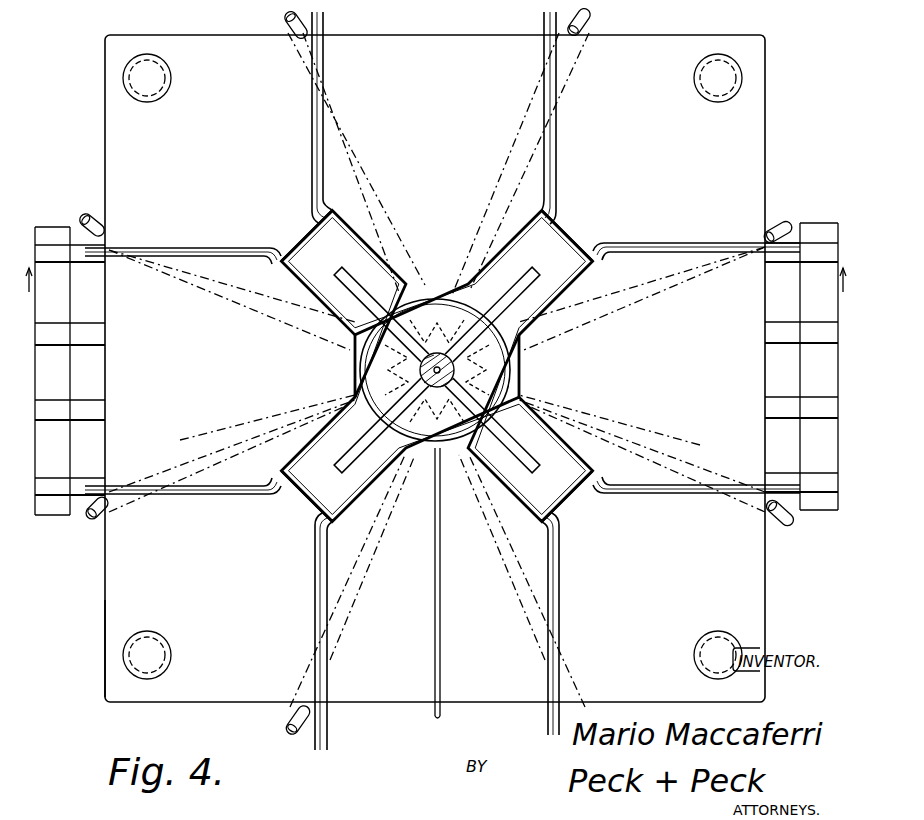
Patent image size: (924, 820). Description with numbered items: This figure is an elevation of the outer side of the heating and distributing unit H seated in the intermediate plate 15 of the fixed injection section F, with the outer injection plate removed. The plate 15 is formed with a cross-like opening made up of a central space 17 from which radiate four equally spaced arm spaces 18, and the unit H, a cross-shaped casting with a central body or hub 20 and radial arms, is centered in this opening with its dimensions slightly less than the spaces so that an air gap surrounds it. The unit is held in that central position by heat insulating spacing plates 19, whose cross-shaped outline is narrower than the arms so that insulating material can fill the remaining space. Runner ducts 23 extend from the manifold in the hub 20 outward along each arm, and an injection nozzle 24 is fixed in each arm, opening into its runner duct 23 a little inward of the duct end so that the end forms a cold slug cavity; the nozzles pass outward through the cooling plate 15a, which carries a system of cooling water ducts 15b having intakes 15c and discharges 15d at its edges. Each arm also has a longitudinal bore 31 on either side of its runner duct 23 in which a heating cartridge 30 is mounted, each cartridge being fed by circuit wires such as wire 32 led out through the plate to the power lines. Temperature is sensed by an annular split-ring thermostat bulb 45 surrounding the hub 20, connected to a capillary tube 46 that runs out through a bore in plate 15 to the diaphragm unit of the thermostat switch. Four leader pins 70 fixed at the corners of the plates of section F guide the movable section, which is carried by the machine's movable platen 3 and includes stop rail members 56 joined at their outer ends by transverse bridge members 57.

The movable platen 3 is at (436, 369).
The intermediate plate 15 is at (210, 58).
The cooling plate 15a is at (323, 375).
The cooling water ducts 15b is at (148, 240).
The cooling water intakes 15c is at (100, 515).
The cooling water discharges 15d is at (94, 220).
The central space 17 is at (437, 320).
The spaces 18 is at (548, 310).
The spacing plates 19 is at (452, 455).
The central body 20 is at (432, 315).
The runner ducts 23 is at (498, 302).
The injection nozzle 24 is at (268, 452).
The heating cartridges 30 is at (578, 506).
The bore 31 is at (285, 262).
The circuit wire 32 is at (546, 22).
The thermostat bulb 45 is at (368, 375).
The capillary tube 46 is at (435, 634).
The stop rail member 56 is at (775, 328).
The bridge members 57 is at (812, 238).
The leader pins 70 is at (147, 72).
The fixed injection section F is at (125, 660).
The heating and distributing unit H is at (302, 246).